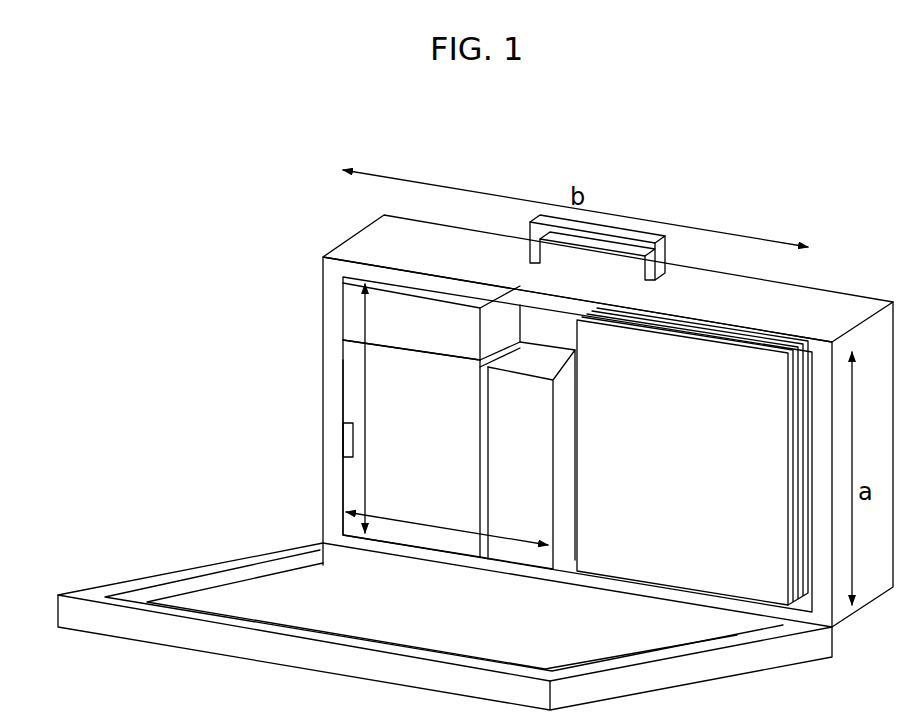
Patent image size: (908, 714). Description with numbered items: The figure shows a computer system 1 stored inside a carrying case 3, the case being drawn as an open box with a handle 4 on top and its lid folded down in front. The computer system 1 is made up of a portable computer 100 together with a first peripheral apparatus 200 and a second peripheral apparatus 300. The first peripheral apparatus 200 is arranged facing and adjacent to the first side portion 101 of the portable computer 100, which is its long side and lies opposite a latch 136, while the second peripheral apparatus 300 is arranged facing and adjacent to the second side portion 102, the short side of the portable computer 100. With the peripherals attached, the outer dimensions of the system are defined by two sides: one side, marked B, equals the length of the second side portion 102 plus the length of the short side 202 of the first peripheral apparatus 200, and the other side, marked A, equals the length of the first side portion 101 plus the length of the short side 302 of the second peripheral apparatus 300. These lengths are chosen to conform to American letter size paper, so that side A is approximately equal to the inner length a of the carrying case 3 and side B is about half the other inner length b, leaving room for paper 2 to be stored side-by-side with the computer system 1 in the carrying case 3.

The computer system 1 is at (300, 494).
The paper 2 is at (650, 422).
The carrying case 3 is at (393, 246).
The handle 4 is at (649, 222).
The portable computer 100 is at (344, 466).
The first side portion 101 is at (486, 495).
The second side portion 102 is at (344, 348).
The latch 136 is at (344, 438).
The first peripheral apparatus 200 is at (563, 538).
The short side 202 is at (510, 561).
The second peripheral apparatus 300 is at (344, 303).
The short side 302 is at (440, 337).